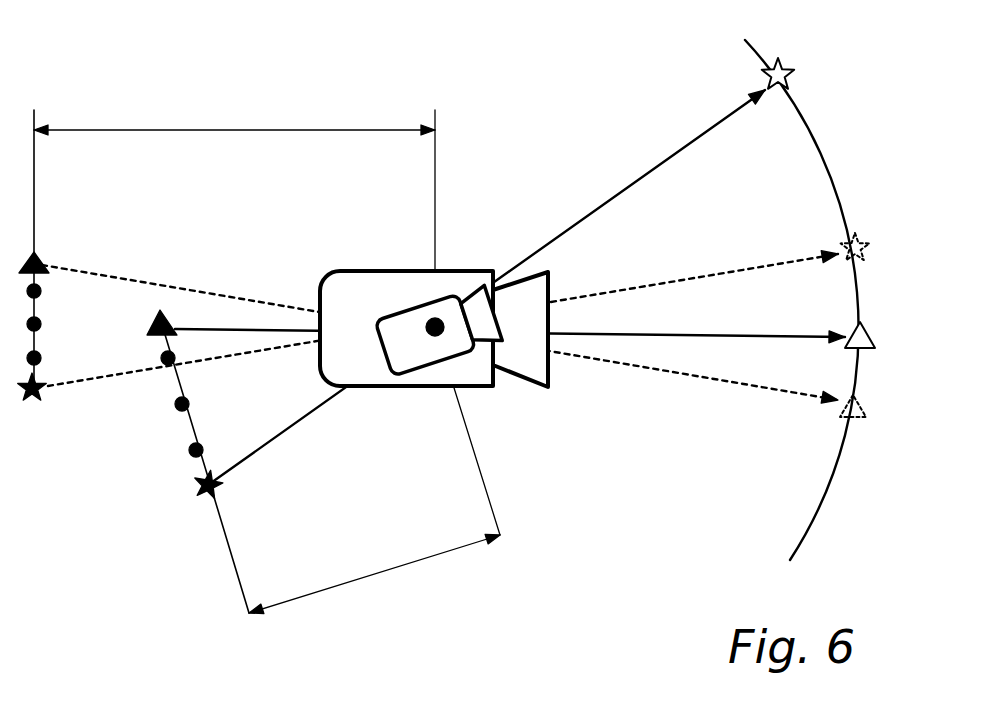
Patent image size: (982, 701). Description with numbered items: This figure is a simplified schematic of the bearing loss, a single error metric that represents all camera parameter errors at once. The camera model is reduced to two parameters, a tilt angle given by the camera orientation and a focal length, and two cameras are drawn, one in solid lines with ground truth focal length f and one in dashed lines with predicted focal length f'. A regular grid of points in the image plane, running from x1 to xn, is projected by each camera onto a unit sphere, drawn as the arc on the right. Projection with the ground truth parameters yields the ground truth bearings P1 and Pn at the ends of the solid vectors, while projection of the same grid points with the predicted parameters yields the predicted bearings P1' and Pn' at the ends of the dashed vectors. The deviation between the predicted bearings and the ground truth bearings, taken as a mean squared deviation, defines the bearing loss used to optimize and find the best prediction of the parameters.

The first grid point in the image plane x1 is at (41, 250).
The n-th grid point in the image plane xn is at (41, 407).
The n-th ground truth bearing Pn is at (795, 72).
The first ground truth bearing P1 is at (877, 345).
The n-th predicted bearing Pn' is at (874, 243).
The first predicted bearing P1' is at (871, 418).
The focal length f is at (374, 470).
The predicted focal length f' is at (234, 210).